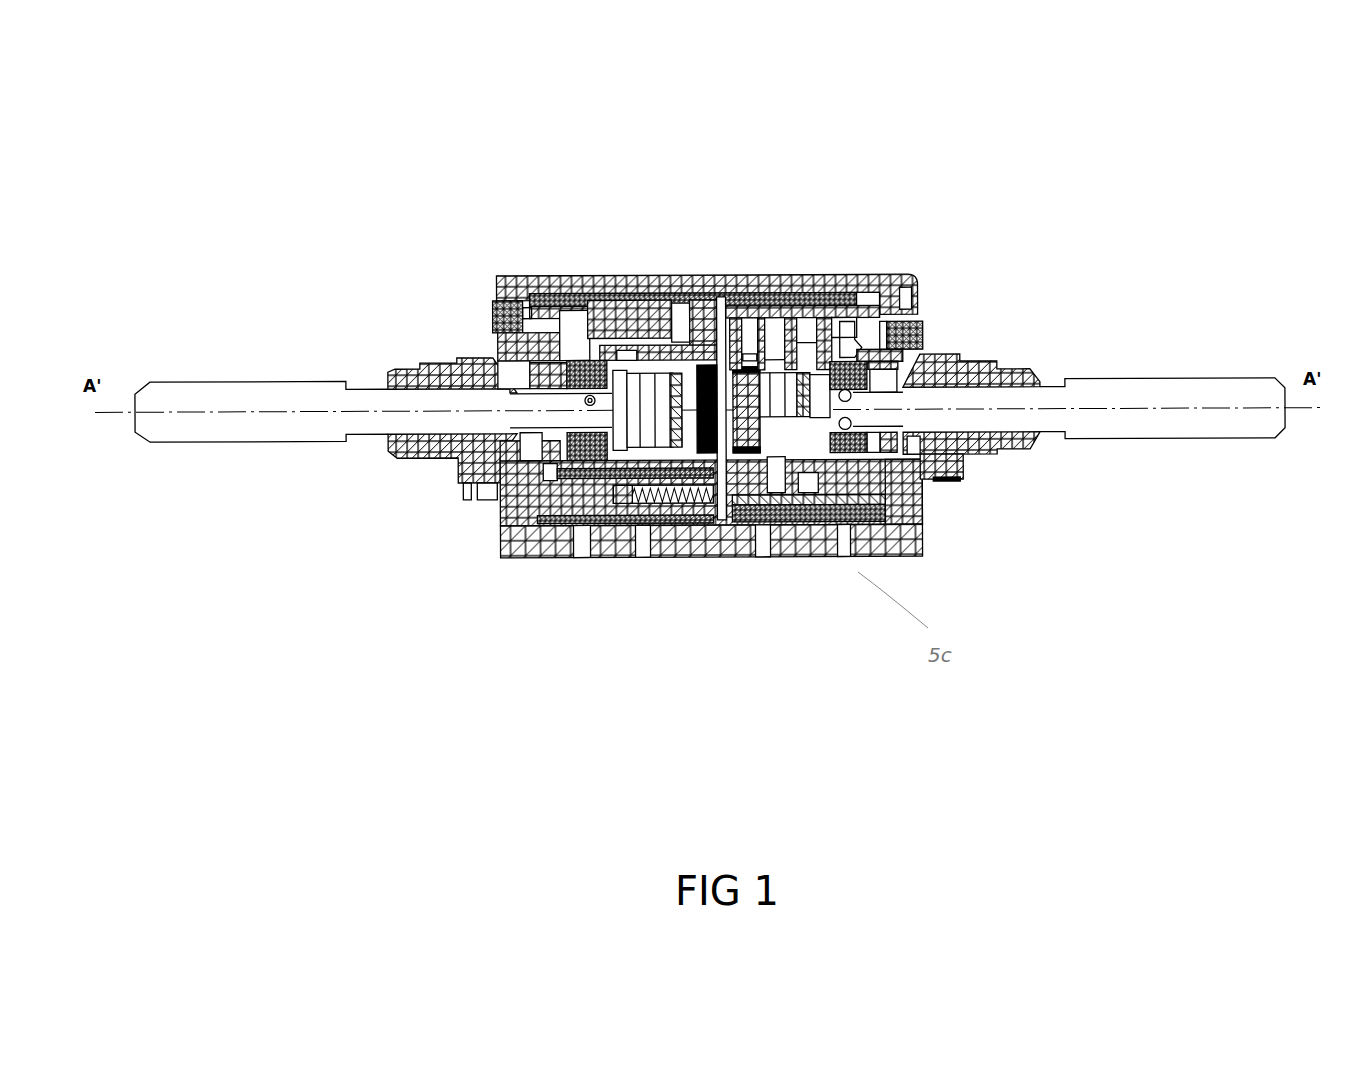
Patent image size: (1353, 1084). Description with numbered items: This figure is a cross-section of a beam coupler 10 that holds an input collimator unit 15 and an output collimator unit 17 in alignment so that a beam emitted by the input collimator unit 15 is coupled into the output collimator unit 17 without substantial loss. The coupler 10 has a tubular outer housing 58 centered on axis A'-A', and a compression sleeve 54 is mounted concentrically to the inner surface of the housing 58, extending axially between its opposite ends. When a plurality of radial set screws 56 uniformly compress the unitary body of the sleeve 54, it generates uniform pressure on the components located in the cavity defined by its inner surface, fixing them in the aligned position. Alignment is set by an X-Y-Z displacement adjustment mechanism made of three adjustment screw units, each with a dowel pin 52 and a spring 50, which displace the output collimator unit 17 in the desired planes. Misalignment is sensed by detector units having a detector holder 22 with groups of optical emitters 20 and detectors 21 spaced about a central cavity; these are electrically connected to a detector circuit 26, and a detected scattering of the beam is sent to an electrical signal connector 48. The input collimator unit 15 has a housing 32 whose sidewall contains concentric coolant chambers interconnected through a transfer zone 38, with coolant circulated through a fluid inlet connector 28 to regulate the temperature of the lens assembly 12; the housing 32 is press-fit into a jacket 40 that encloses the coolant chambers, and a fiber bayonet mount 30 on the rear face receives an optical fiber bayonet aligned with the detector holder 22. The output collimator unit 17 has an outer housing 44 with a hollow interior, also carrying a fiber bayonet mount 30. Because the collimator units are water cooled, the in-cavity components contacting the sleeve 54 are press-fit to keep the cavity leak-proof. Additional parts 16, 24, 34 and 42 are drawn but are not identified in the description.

The coupler 10 is at (892, 553).
The lens assembly 12 is at (683, 495).
The input collimator unit 15 is at (304, 470).
The center partition plate 16 is at (718, 300).
The output collimator unit 17 is at (986, 334).
The optical emitters 20 is at (545, 488).
The detectors 21 is at (585, 398).
The detector holder 22 is at (840, 373).
The retaining block 24 is at (960, 455).
The detector circuit 26 is at (483, 472).
The fluid inlet connector 28 is at (772, 340).
The fiber bayonet mount 30 is at (468, 368).
The housing 32 is at (923, 493).
The lower plate 34 is at (700, 497).
The transfer zone 38 is at (637, 347).
The jacket 40 is at (743, 303).
The bottom plate segment 42 is at (748, 545).
The outer housing 44 is at (500, 500).
The electrical signal connector 48 is at (495, 305).
The spring 50 is at (650, 505).
The dowel pin 52 is at (837, 293).
The compression sleeve 54 is at (580, 302).
The radial set screws 56 is at (565, 560).
The tubular outer housing 58 is at (820, 557).